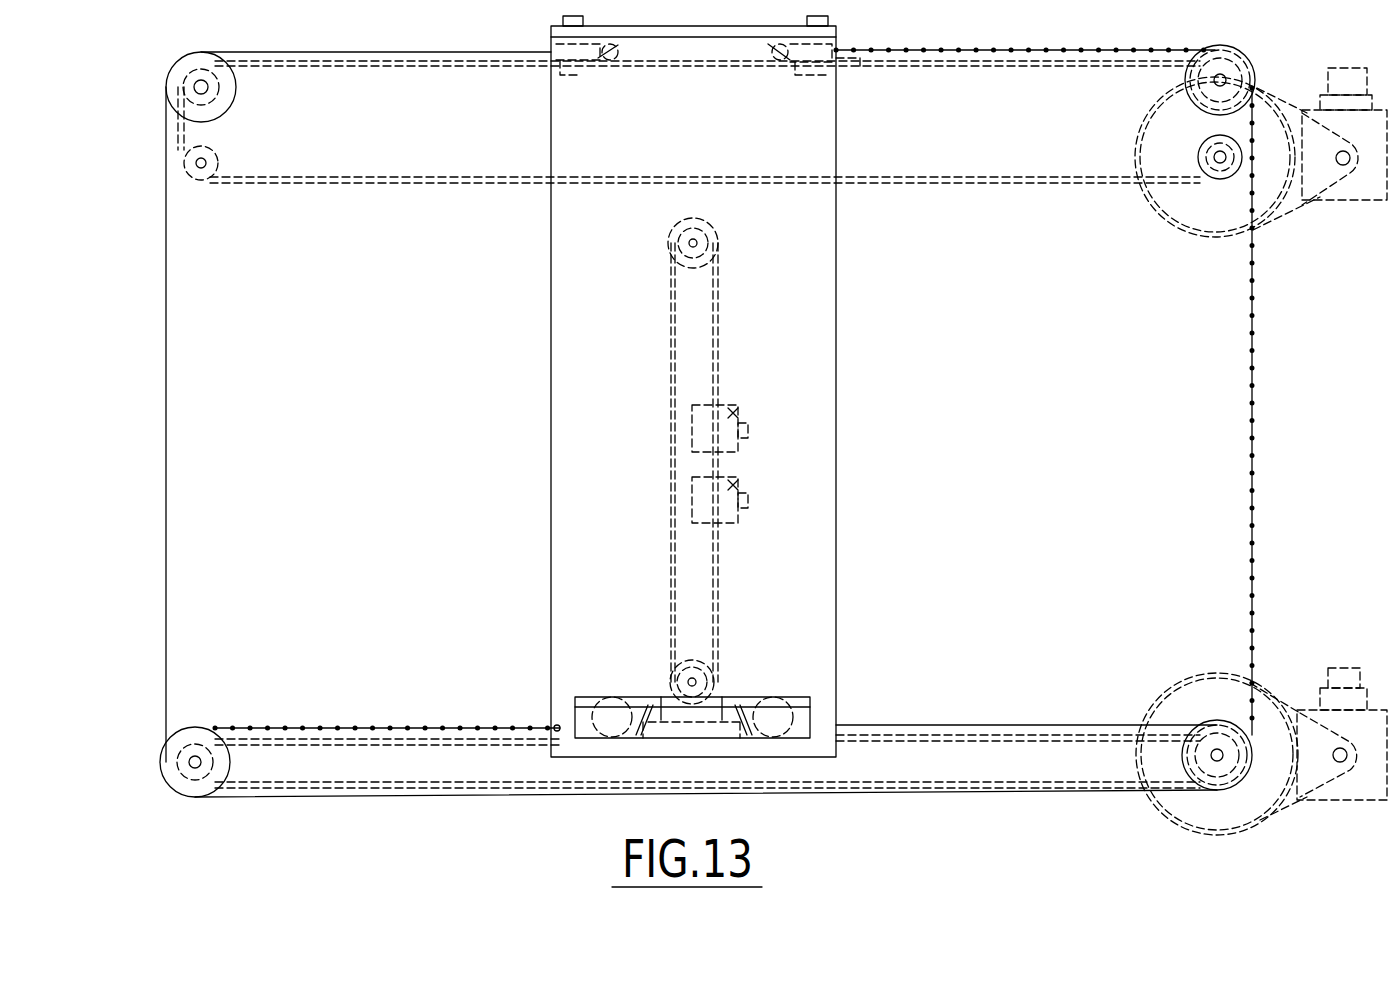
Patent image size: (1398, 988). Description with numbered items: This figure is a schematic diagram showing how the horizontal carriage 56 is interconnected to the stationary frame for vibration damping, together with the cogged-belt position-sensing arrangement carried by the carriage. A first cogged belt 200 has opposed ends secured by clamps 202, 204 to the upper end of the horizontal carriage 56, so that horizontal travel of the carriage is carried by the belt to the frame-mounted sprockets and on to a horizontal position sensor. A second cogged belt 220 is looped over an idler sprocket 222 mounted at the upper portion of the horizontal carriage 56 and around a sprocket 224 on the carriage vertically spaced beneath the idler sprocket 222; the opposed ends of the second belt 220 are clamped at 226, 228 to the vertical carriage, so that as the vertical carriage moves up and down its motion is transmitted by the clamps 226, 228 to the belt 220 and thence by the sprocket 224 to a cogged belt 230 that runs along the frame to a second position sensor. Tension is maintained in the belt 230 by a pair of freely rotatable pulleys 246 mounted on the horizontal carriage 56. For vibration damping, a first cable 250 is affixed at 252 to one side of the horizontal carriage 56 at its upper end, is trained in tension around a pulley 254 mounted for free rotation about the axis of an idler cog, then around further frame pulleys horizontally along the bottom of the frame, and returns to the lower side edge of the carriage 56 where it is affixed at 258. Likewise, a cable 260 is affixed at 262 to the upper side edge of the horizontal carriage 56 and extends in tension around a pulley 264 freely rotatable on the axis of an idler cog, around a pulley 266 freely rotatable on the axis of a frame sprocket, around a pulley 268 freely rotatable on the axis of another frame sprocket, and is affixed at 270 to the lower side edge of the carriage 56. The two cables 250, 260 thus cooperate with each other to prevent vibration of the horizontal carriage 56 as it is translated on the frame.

The horizontal carriage 56 is at (842, 395).
The first cogged belt 200 is at (1045, 62).
The clamp 202 is at (797, 80).
The clamp 204 is at (575, 70).
The second cogged belt 220 is at (718, 600).
The idler sprocket 222 is at (712, 240).
The sprocket 224 is at (715, 660).
The clamp 226 is at (740, 410).
The clamp 228 is at (740, 480).
The cogged belt 230 is at (980, 722).
The freely rotatable pulleys 246 is at (605, 697).
The first cable 250 is at (1085, 48).
The cable attachment point 252 is at (845, 50).
The pulley 254 is at (1240, 55).
The cable attachment point 258 is at (570, 735).
The cable 260 is at (340, 52).
The cable attachment point 262 is at (551, 45).
The pulley 264 is at (237, 105).
The pulley 266 is at (197, 730).
The pulley 268 is at (1247, 730).
The cable attachment point 270 is at (838, 722).